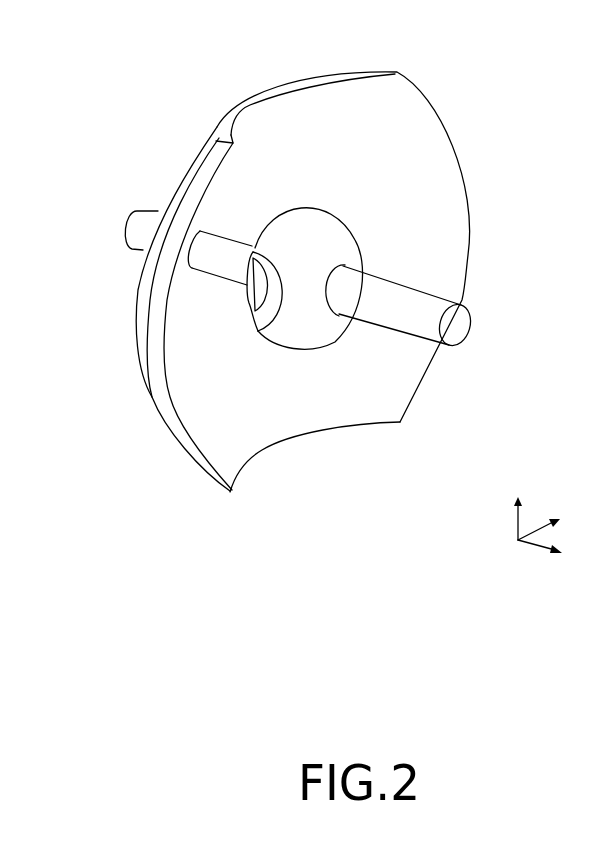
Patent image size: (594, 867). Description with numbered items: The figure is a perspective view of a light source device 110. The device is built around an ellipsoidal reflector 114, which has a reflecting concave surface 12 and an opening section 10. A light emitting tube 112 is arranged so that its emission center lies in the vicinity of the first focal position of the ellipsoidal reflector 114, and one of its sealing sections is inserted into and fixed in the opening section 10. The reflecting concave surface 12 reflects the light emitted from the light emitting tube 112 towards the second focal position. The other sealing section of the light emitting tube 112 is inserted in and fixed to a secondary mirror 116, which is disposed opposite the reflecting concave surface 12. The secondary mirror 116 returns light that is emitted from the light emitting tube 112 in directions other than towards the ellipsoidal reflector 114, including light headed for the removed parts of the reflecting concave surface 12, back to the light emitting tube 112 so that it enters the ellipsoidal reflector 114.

The light source device 110 is at (512, 55).
The reflecting concave surface 12 is at (423, 158).
The ellipsoidal reflector 114 is at (213, 134).
The secondary mirror 116 is at (316, 432).
The opening section 10 is at (190, 283).
The light emitting tube 112 is at (423, 300).